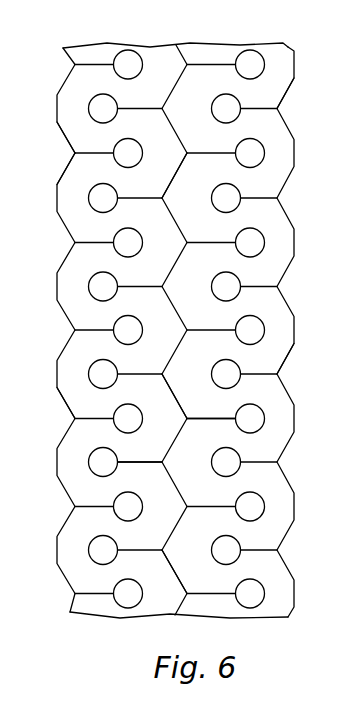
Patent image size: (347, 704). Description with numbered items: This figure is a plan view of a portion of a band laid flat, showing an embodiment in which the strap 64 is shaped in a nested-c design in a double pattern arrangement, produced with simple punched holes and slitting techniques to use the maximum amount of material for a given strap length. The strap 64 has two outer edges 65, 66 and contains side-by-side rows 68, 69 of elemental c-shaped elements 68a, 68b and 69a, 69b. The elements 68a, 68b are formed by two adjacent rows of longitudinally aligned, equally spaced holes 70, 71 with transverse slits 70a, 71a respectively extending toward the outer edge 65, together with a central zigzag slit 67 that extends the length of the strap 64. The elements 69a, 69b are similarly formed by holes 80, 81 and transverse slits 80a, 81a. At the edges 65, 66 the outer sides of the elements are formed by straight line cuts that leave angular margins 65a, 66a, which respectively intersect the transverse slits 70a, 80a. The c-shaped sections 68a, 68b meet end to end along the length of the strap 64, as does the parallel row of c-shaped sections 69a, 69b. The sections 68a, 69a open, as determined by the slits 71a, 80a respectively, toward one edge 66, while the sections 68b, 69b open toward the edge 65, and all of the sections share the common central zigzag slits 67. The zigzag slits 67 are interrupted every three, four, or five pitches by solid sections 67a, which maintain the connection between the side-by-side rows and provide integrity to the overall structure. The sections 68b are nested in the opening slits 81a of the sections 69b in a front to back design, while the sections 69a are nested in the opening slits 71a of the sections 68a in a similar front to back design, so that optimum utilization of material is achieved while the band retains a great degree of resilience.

The strap 64 is at (83, 46).
The edge 65 is at (57, 203).
The angular margin 65a is at (67, 140).
The edge 66 is at (295, 151).
The angular margin 66a is at (286, 93).
The central zigzag slit 67 is at (178, 229).
The solid section 67a is at (180, 378).
The row 68 is at (151, 44).
The c-shaped element 68a is at (68, 192).
The c-shaped element 68b is at (150, 275).
The row 69 is at (258, 42).
The c-shaped element 69a is at (217, 170).
The c-shaped element 69b is at (268, 305).
The hole 70 is at (92, 292).
The transverse slit 70a is at (95, 416).
The hole 71 is at (121, 339).
The transverse slit 71a is at (145, 460).
The hole 80 is at (227, 275).
The transverse slit 80a is at (268, 372).
The hole 81 is at (258, 322).
The opening slit 81a is at (217, 422).